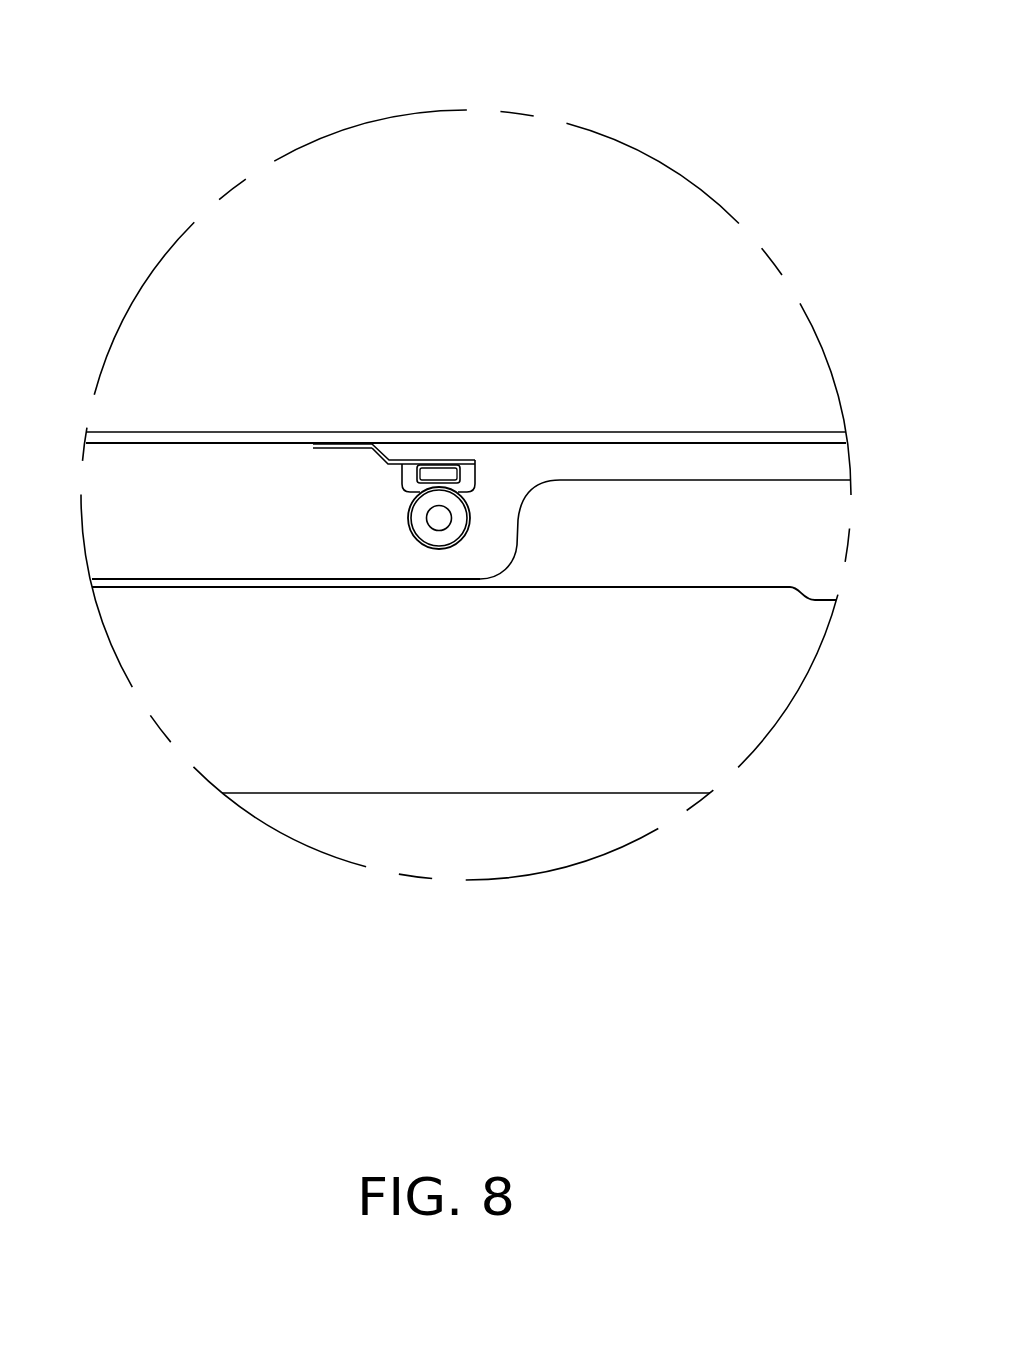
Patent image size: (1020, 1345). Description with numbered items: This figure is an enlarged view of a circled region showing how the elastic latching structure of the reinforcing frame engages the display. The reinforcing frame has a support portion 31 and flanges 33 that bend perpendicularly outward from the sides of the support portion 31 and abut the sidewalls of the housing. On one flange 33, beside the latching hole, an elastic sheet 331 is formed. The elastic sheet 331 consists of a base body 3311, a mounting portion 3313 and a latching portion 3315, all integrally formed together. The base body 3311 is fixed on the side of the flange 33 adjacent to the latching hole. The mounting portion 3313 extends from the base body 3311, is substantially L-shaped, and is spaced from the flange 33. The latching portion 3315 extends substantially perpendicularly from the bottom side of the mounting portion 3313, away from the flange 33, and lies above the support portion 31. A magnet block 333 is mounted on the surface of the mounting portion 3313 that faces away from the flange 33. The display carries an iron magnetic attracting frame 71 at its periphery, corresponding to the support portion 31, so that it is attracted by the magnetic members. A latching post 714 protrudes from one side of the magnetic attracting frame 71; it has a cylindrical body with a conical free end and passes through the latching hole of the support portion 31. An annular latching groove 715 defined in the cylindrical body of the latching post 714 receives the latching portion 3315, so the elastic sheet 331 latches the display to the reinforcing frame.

The support portion 31 is at (137, 497).
The flange 33 is at (167, 437).
The elastic sheet 331 is at (279, 688).
The base body 3311 is at (322, 447).
The mounting portion 3313 is at (375, 453).
The latching portion 3315 is at (412, 483).
The magnet block 333 is at (448, 473).
The magnetic attracting frame 71 is at (600, 510).
The latching post 714 is at (437, 503).
The annular latching groove 715 is at (440, 549).